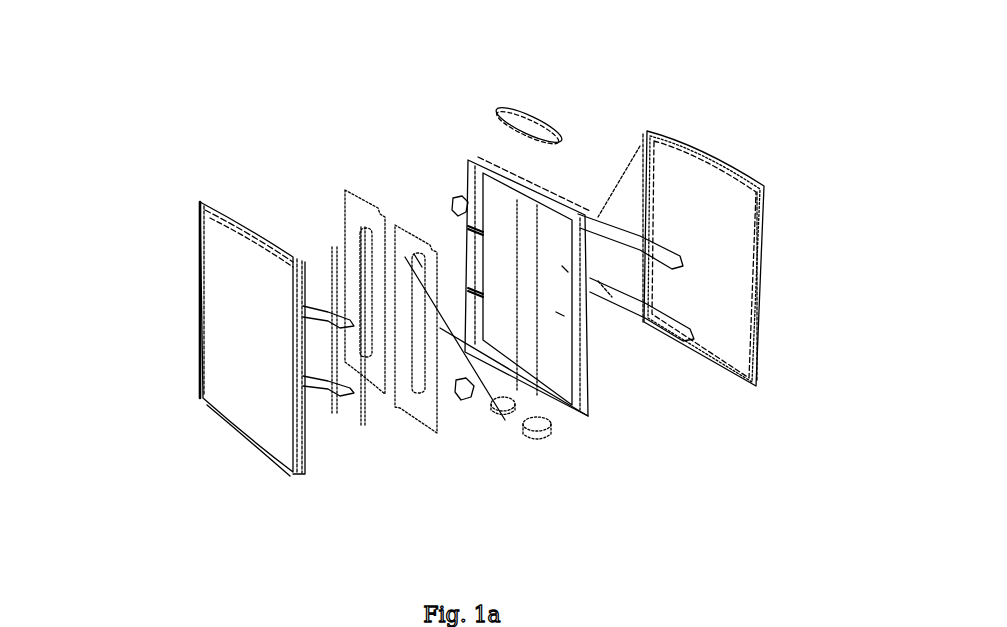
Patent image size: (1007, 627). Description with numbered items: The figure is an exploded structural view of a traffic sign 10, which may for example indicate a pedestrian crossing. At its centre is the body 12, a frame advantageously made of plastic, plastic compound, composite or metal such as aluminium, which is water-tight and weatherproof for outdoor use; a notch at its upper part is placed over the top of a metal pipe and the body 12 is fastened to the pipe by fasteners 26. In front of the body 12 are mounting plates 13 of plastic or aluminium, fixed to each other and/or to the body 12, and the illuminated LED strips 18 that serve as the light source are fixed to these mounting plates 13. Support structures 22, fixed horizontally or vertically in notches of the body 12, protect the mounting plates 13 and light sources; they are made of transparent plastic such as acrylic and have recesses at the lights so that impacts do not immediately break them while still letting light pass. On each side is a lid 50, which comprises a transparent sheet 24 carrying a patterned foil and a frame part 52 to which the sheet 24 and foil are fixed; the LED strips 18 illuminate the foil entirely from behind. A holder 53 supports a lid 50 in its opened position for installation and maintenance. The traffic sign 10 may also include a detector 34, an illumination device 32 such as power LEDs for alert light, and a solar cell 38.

The traffic sign 10 is at (180, 113).
The body 12 is at (577, 400).
The mounting plate 13 is at (358, 190).
The LED strip 18 is at (335, 270).
The support structure 22 is at (313, 392).
The transparent sheet 24 is at (238, 370).
The fastener 26 is at (456, 200).
The illumination device 32 is at (537, 424).
The detector 34 is at (503, 412).
The solar cell 38 is at (530, 118).
The lid 50 is at (830, 92).
The frame part 52 is at (290, 473).
The holder 53 is at (442, 323).